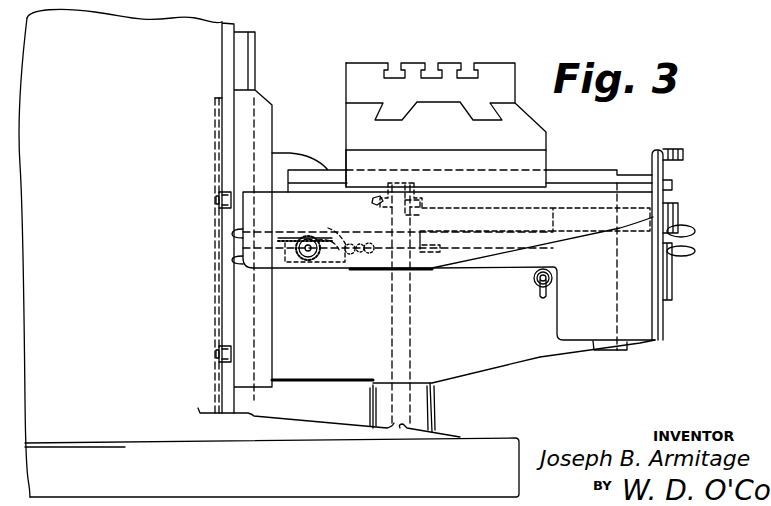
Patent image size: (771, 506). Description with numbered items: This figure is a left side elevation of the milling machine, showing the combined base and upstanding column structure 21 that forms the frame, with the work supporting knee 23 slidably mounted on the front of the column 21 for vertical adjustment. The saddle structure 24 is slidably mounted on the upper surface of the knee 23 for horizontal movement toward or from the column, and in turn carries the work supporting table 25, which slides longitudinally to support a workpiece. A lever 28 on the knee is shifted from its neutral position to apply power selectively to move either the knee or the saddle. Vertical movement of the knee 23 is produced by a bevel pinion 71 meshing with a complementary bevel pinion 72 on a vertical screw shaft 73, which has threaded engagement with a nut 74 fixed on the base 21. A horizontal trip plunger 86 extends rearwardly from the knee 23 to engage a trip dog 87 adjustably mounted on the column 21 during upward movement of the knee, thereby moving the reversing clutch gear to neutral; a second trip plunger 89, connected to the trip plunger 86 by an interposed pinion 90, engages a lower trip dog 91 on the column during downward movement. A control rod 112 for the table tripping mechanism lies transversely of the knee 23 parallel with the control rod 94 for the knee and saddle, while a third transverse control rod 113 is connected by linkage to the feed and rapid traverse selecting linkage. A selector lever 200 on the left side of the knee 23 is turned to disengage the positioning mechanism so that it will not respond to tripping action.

The combined base and upstanding column structure 21 is at (257, 58).
The work supporting knee 23 is at (517, 345).
The saddle structure 24 is at (545, 130).
The work supporting table 25 is at (493, 73).
The lever 28 is at (683, 155).
The bevel pinion 71 is at (422, 250).
The bevel pinion 72 is at (373, 203).
The vertical screw shaft 73 is at (393, 338).
The nut 74 is at (382, 407).
The trip plunger 86 is at (300, 235).
The trip dog 87 is at (217, 202).
The second trip plunger 89 is at (305, 262).
The pinion 90 is at (335, 267).
The lower trip dog 91 is at (218, 352).
The control rod 94 is at (355, 247).
The control rod 112 is at (325, 230).
The third transverse control rod 113 is at (365, 257).
The selector lever 200 is at (537, 287).